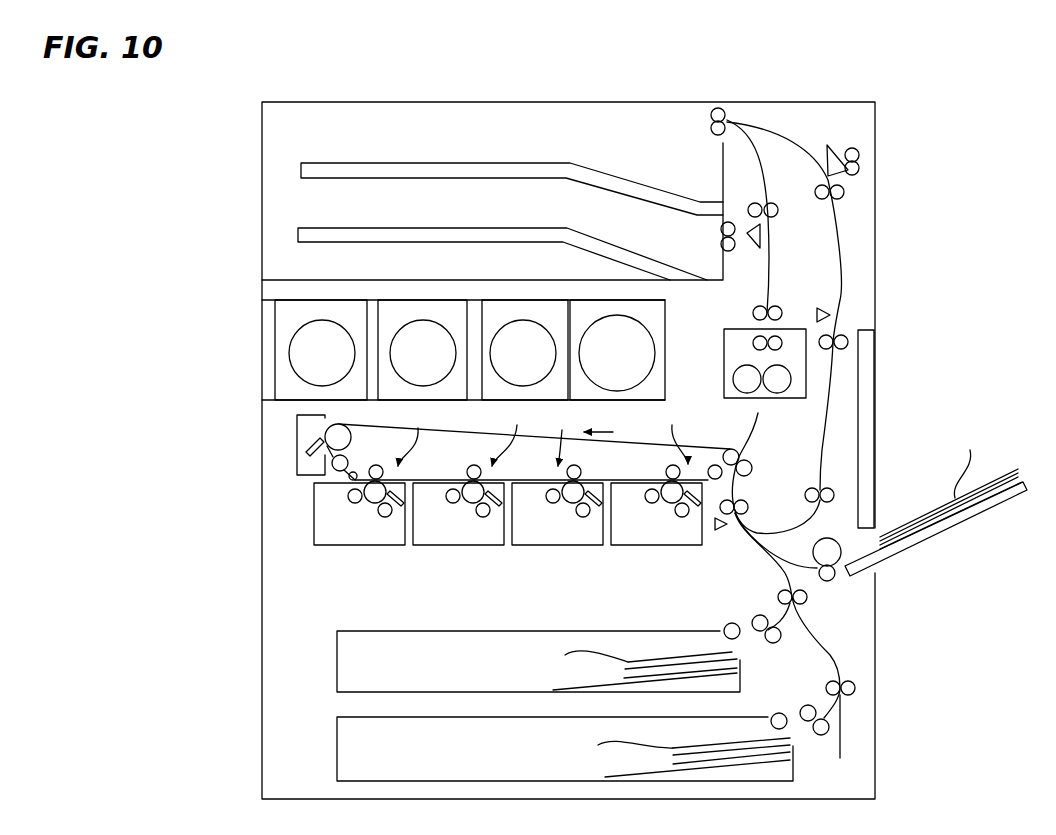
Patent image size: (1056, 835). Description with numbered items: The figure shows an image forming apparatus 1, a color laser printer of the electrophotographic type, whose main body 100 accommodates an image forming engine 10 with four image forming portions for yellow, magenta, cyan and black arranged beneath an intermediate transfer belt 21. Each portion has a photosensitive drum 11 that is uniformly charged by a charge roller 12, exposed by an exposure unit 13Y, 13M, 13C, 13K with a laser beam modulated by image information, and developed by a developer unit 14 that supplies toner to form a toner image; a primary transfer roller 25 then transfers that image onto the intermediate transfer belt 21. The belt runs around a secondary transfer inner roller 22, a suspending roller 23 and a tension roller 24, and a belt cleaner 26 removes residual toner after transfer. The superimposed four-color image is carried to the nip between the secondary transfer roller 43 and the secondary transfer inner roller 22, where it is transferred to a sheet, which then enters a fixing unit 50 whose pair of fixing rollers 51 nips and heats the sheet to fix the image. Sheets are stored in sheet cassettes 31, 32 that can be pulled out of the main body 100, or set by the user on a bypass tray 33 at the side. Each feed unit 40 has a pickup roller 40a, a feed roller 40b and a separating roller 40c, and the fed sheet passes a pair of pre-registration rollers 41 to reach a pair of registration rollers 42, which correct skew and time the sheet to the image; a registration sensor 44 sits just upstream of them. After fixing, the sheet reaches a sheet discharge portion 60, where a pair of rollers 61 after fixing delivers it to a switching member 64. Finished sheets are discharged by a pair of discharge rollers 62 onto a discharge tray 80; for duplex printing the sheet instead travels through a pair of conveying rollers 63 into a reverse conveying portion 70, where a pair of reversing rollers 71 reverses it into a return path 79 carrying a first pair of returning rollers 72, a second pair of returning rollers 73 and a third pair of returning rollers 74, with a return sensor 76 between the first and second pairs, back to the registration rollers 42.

The image forming apparatus 1 is at (800, 75).
The main body 100 is at (877, 127).
The image forming engine 10 is at (302, 547).
The photosensitive drum 11 is at (364, 501).
The charge roller 12 is at (386, 518).
The developer unit 14 is at (350, 501).
The exposure unit 13Y is at (341, 522).
The exposure unit 13M is at (468, 505).
The exposure unit 13C is at (568, 505).
The exposure unit 13K is at (667, 505).
The intermediate transfer belt 21 is at (352, 426).
The secondary transfer inner roller 22 is at (730, 449).
The suspending roller 23 is at (325, 432).
The tension roller 24 is at (338, 471).
The primary transfer roller 25 is at (376, 464).
The belt cleaner 26 is at (306, 450).
The sheet cassette 31 is at (337, 668).
The sheet cassette 32 is at (337, 745).
The bypass tray 33 is at (922, 543).
The feed unit 40 is at (742, 611).
The pickup roller 40a is at (770, 718).
The feed roller 40b is at (806, 705).
The separating roller 40c is at (822, 737).
The pair of pre-registration rollers 41 is at (782, 593).
The pair of registration rollers 42 is at (744, 503).
The secondary transfer roller 43 is at (750, 470).
The registration sensor 44 is at (718, 531).
The fixing unit 50 is at (717, 354).
The pair of fixing rollers 51 is at (745, 378).
The sheet discharge portion 60 is at (744, 206).
The pair of rollers after fixing 61 is at (772, 307).
The pair of discharge rollers 62 is at (722, 229).
The pair of conveying rollers 63 is at (772, 204).
The switching member 64 is at (762, 236).
The reverse conveying portion 70 is at (859, 277).
The pair of reversing rollers 71 is at (722, 108).
The first pair of returning rollers 72 is at (845, 192).
The second pair of returning rollers 73 is at (846, 347).
The third pair of returning rollers 74 is at (828, 493).
The return sensor 76 is at (822, 302).
The return path 79 is at (841, 228).
The discharge tray 80 is at (527, 227).